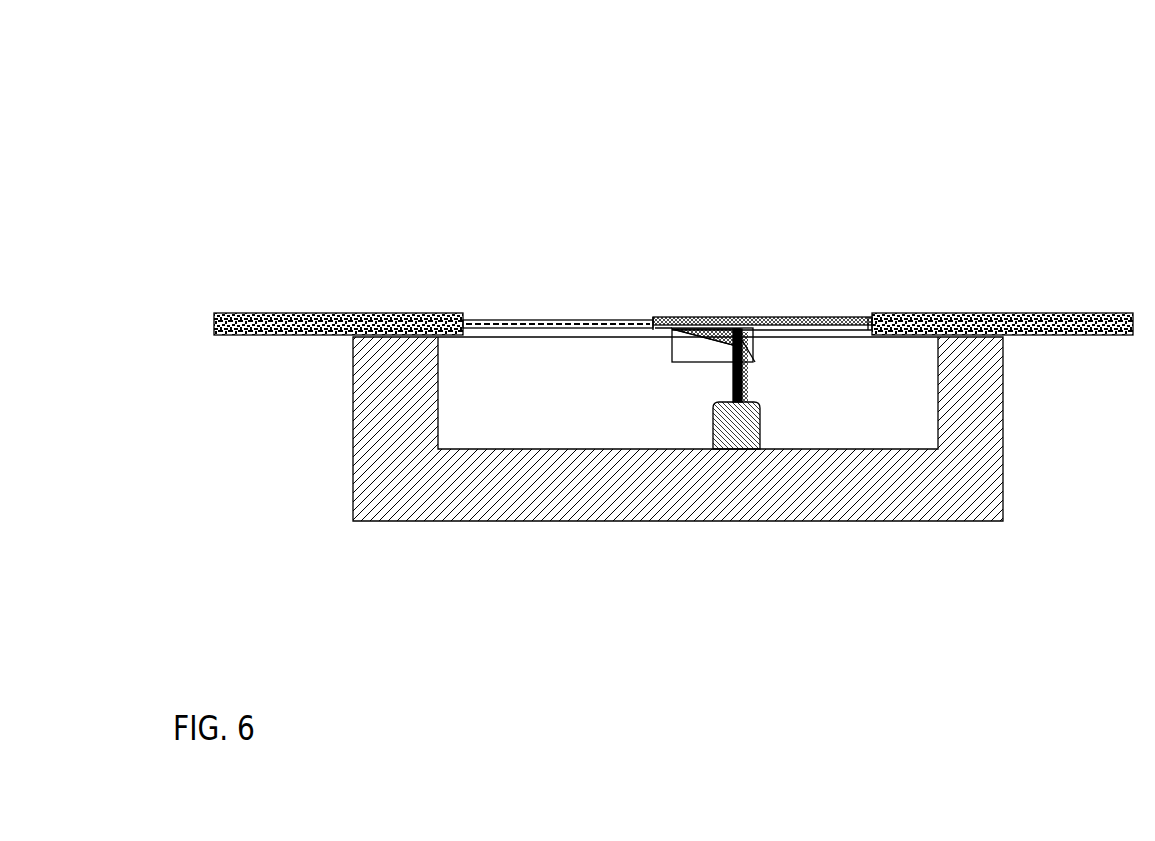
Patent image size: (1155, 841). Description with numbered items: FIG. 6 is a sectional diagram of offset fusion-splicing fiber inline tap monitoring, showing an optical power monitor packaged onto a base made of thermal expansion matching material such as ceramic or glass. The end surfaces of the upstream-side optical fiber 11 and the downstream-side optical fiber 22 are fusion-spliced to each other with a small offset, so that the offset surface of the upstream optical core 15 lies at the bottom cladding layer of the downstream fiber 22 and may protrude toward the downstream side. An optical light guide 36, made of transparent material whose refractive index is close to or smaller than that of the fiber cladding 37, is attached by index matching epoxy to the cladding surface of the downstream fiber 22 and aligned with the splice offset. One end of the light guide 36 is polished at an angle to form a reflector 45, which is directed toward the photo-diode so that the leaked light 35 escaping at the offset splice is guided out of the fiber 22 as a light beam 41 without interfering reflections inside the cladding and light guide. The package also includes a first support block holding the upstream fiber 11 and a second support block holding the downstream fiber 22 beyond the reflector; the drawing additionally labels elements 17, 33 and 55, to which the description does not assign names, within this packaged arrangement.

The upstream-side optical fiber 11 is at (338, 313).
The optical core 15 is at (497, 320).
The support post 17 is at (747, 450).
The downstream-side optical fiber 22 is at (1033, 313).
The joint 33 is at (655, 315).
The leaked light 35 is at (683, 317).
The optical light guide 36 is at (690, 347).
The fiber cladding 37 is at (850, 317).
The light beam 41 is at (723, 320).
The reflector 45 is at (750, 352).
The housing 55 is at (468, 521).